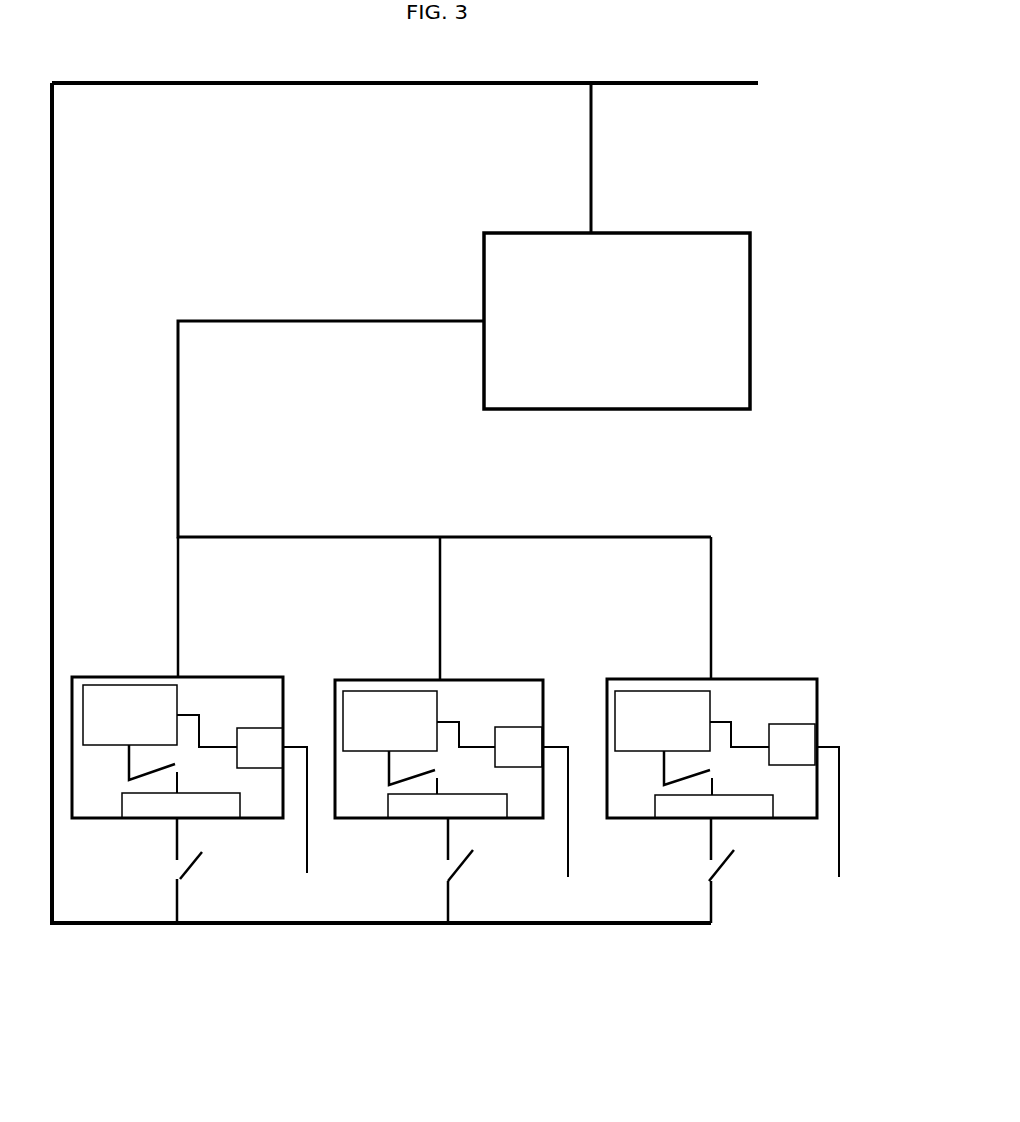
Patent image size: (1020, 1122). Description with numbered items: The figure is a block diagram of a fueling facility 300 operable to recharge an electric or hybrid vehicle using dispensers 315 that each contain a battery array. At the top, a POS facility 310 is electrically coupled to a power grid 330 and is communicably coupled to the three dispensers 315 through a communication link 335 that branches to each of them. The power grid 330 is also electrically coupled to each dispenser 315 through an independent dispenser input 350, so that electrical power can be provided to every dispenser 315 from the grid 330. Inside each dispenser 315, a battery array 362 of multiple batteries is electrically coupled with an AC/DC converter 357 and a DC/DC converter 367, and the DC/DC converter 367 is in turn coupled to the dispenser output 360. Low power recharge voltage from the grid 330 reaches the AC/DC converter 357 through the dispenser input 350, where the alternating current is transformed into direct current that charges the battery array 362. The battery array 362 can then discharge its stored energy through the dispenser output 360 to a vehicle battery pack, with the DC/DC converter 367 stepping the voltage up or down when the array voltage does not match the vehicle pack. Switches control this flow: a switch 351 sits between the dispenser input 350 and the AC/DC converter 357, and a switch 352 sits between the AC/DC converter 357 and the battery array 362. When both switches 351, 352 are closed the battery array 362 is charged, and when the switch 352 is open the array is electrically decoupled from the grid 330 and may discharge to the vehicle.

The fueling facility 300 is at (562, 974).
The POS facility 310 is at (617, 321).
The dispenser 315 is at (194, 674).
The power grid 330 is at (689, 88).
The communication link 335 is at (182, 360).
The dispenser input 350 is at (174, 905).
The switch 351 is at (190, 874).
The switch 352 is at (143, 768).
The AC/DC converter 357 is at (447, 795).
The dispenser output 360 is at (568, 812).
The battery array 362 is at (426, 718).
The DC/DC converter 367 is at (526, 746).